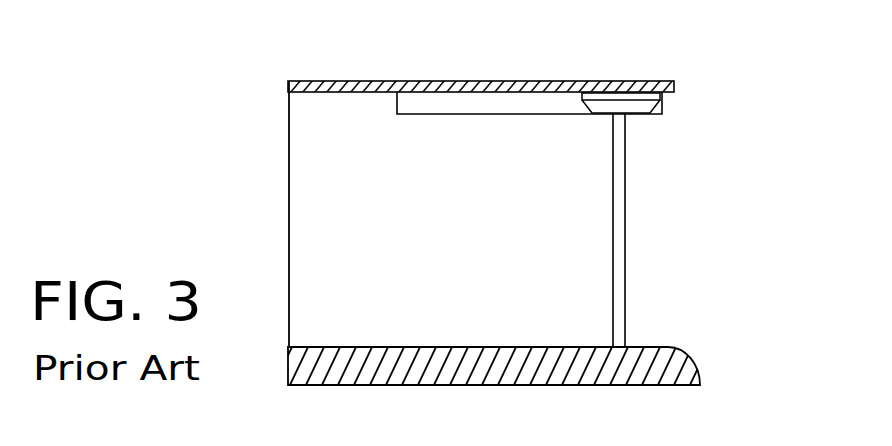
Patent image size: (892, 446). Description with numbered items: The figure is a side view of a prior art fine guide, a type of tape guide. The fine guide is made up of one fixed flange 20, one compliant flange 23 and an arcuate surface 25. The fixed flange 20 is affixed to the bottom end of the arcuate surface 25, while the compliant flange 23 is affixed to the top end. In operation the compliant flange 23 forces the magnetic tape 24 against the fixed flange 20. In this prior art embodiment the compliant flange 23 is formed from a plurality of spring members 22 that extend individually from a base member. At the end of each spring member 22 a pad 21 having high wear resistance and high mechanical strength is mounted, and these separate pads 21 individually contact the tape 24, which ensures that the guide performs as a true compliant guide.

The fixed flange 20 is at (699, 362).
The pad 21 is at (657, 107).
The spring member 22 is at (511, 82).
The compliant flange 23 is at (690, 80).
The magnetic tape 24 is at (627, 252).
The arcuate surface 25 is at (488, 312).